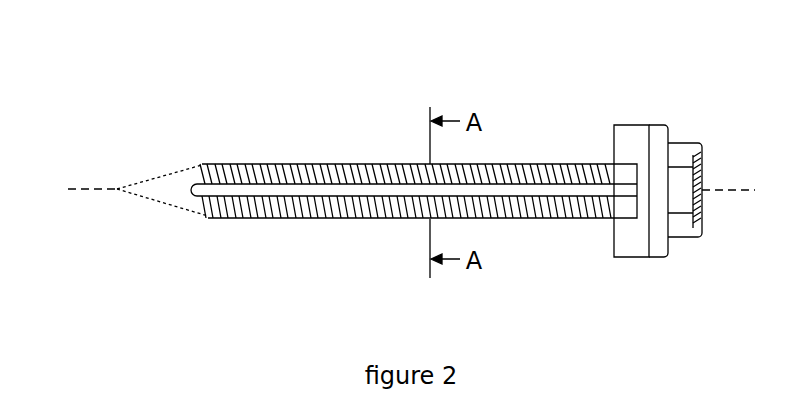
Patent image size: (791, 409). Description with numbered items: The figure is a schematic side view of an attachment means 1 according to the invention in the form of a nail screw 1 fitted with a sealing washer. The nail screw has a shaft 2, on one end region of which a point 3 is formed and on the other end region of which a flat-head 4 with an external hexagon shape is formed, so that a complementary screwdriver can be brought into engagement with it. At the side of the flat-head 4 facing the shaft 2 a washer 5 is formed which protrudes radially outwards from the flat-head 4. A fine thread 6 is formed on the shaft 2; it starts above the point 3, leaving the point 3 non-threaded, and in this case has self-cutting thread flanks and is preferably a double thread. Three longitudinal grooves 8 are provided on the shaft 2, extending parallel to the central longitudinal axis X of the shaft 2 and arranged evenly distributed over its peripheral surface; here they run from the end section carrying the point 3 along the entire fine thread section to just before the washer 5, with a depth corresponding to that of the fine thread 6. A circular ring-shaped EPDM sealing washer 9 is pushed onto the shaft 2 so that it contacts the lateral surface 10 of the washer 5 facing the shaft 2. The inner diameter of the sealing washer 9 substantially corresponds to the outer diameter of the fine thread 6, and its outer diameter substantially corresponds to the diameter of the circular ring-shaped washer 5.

The attachment means 1 is at (115, 64).
The shaft 2 is at (377, 193).
The point 3 is at (160, 187).
The flat-head 4 is at (688, 151).
The washer 5 is at (660, 133).
The fine thread 6 is at (538, 200).
The longitudinal grooves 8 is at (467, 187).
The sealing washer 9 is at (627, 135).
The lateral surface 10 is at (650, 258).
The central longitudinal axis X is at (82, 189).